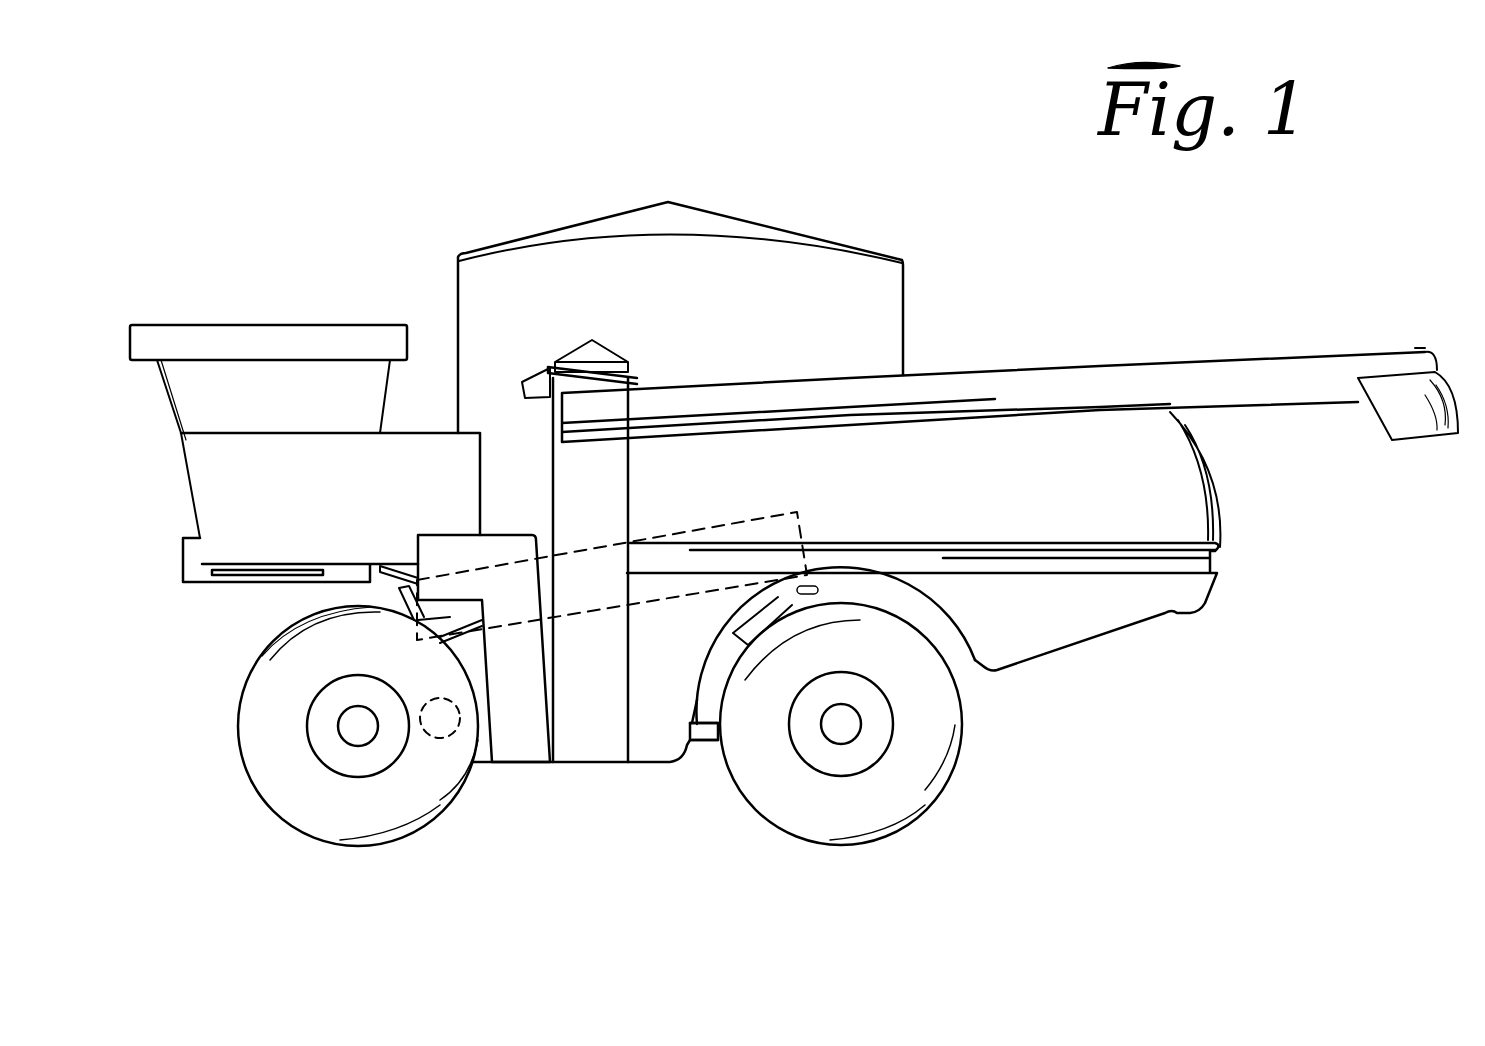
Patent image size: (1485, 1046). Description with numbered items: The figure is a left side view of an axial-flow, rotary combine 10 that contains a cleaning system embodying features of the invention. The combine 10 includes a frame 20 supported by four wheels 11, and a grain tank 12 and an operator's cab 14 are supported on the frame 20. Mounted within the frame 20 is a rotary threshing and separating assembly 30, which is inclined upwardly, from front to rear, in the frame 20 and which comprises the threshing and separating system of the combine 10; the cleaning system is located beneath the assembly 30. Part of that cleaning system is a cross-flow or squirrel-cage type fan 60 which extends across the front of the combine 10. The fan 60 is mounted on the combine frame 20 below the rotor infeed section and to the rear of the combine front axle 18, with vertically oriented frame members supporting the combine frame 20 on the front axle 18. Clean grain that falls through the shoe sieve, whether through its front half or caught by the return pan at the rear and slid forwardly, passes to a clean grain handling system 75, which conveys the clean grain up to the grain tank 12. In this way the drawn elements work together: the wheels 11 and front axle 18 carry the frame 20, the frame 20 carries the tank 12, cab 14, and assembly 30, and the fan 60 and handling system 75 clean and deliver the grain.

The rotary combine 10 is at (465, 195).
The wheels 11 is at (278, 668).
The grain tank 12 is at (897, 292).
The operator's cab 14 is at (312, 333).
The front axle 18 is at (358, 727).
The frame 20 is at (710, 745).
The rotary threshing and separating assembly 30 is at (797, 512).
The fan 60 is at (473, 782).
The clean grain handling system 75 is at (603, 752).